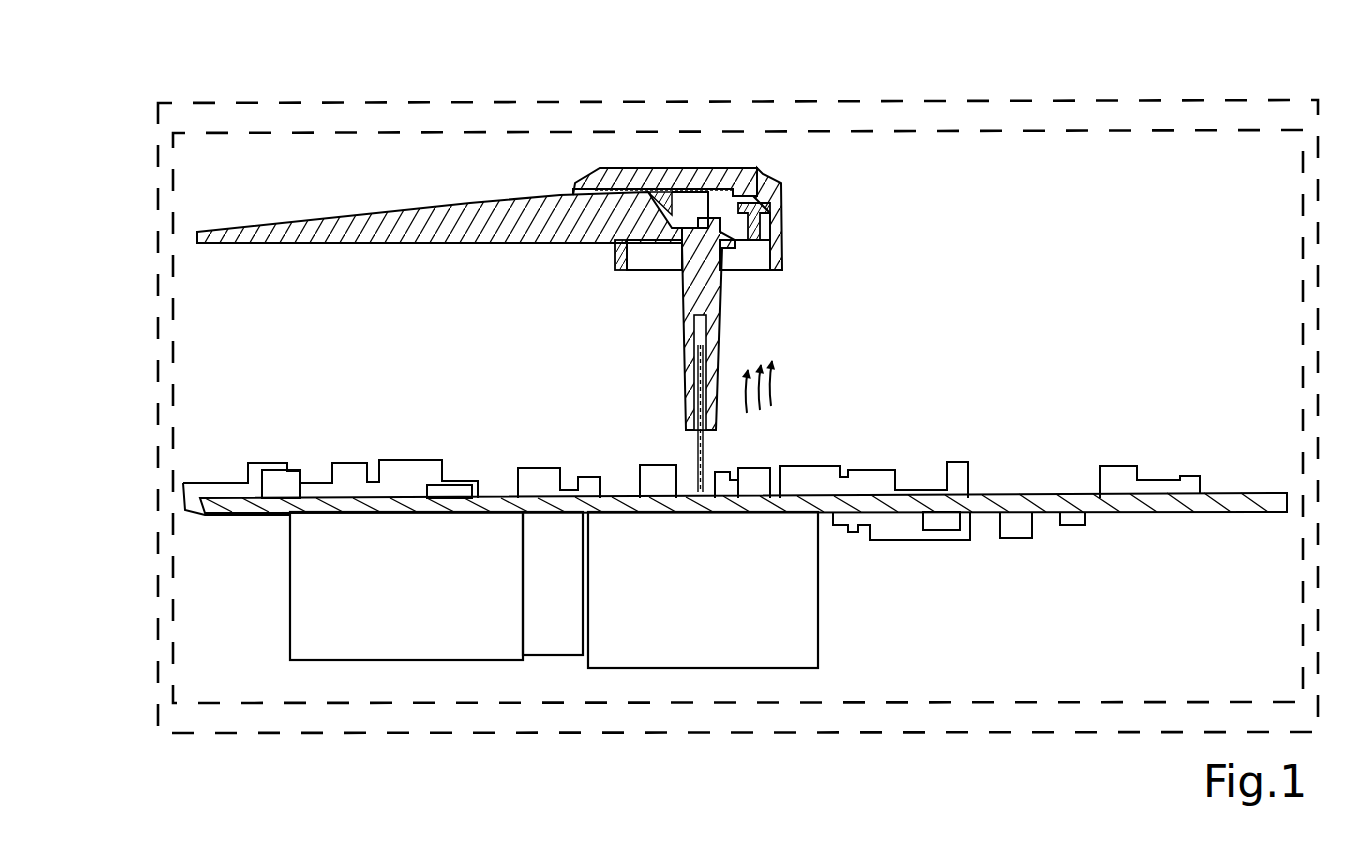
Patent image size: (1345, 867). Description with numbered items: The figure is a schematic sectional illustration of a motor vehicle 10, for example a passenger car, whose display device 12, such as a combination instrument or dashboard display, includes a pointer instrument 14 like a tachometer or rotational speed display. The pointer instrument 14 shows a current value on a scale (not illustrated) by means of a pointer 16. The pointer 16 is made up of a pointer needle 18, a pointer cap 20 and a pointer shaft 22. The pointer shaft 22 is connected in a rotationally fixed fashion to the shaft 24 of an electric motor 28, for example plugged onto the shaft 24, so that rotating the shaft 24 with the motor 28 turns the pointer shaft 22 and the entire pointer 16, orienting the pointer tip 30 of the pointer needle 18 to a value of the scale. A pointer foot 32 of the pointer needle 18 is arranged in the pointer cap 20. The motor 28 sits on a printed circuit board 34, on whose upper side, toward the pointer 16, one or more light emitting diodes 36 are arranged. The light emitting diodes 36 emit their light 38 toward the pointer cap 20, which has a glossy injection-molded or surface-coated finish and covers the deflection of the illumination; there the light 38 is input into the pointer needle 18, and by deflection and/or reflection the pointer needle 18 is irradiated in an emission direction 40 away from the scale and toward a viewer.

The motor vehicle 10 is at (975, 94).
The display device 12 is at (1120, 128).
The pointer instrument 14 is at (1220, 163).
The pointer 16 is at (806, 190).
The pointer needle 18 is at (449, 244).
The pointer cap 20 is at (785, 215).
The pointer shaft 22 is at (712, 310).
The shaft 24 is at (704, 450).
The electric motor 28 is at (668, 530).
The pointer tip 30 is at (209, 223).
The pointer foot 32 is at (578, 264).
The printed circuit board 34 is at (1125, 503).
The light emitting diodes 36 is at (745, 485).
The light 38 is at (784, 388).
The emission direction 40 is at (490, 156).